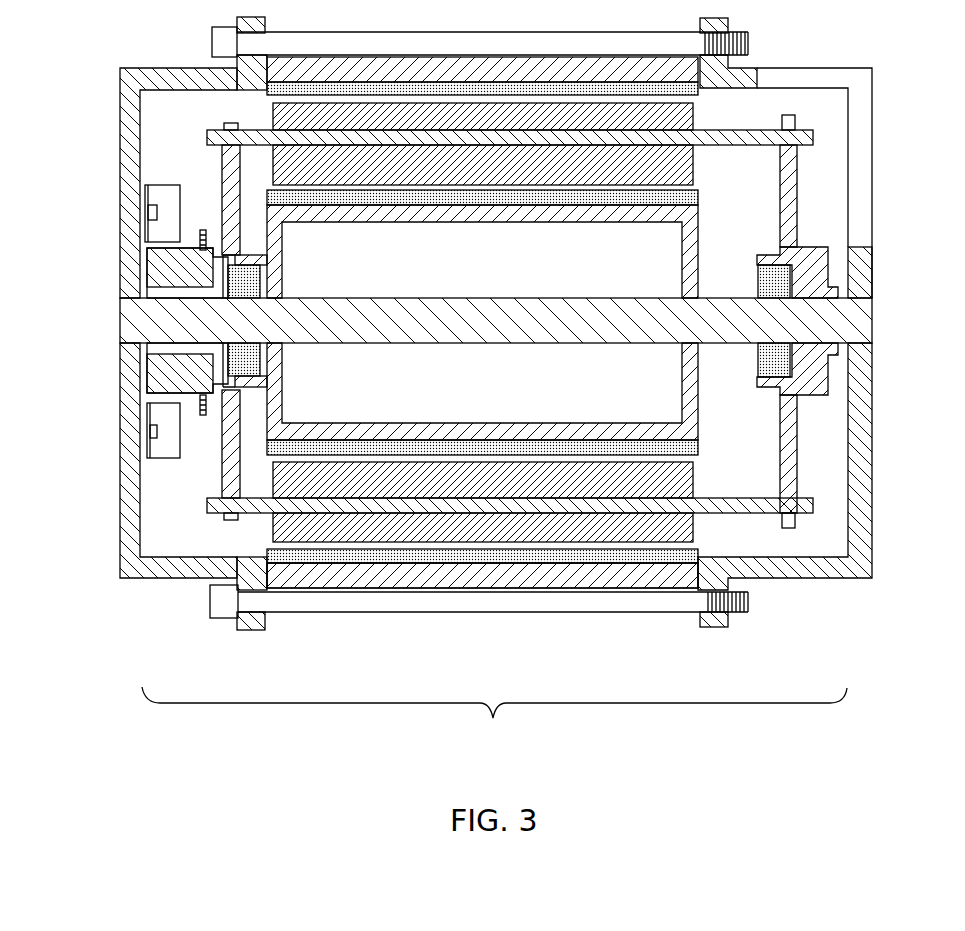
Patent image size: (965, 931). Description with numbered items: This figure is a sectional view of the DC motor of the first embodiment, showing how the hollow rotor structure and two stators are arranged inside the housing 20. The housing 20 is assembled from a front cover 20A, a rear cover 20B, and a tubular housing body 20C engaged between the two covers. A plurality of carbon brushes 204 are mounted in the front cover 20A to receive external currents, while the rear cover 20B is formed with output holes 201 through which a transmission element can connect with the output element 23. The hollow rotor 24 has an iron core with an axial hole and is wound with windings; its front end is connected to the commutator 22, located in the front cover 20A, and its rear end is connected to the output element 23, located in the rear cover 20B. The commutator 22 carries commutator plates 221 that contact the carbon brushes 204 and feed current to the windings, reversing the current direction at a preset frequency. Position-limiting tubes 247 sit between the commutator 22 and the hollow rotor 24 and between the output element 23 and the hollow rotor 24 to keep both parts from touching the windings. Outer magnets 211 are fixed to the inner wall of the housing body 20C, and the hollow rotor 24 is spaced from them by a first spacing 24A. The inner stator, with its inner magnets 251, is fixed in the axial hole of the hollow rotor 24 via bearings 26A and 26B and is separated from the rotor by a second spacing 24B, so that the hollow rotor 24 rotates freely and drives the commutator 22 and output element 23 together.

The housing 20 is at (494, 717).
The front cover 20A is at (168, 578).
The rear cover 20B is at (806, 578).
The housing body 20C is at (488, 575).
The output hole 201 is at (870, 88).
The carbon brush 204 is at (163, 418).
The outer magnet 211 is at (322, 565).
The commutator 22 is at (232, 170).
The commutator plate 221 is at (163, 265).
The output element 23 is at (788, 192).
The hollow rotor 24 is at (682, 528).
The first spacing 24A is at (687, 546).
The second spacing 24B is at (687, 458).
The position-limiting tube 247 is at (243, 520).
The inner magnet 251 is at (273, 448).
The bearing 26A is at (243, 278).
The bearing 26B is at (770, 282).